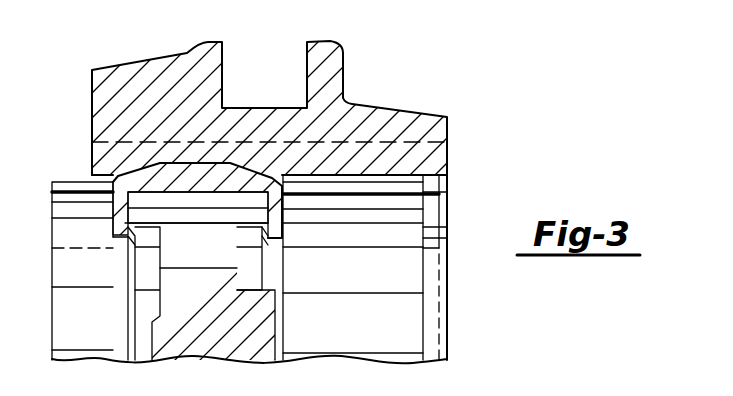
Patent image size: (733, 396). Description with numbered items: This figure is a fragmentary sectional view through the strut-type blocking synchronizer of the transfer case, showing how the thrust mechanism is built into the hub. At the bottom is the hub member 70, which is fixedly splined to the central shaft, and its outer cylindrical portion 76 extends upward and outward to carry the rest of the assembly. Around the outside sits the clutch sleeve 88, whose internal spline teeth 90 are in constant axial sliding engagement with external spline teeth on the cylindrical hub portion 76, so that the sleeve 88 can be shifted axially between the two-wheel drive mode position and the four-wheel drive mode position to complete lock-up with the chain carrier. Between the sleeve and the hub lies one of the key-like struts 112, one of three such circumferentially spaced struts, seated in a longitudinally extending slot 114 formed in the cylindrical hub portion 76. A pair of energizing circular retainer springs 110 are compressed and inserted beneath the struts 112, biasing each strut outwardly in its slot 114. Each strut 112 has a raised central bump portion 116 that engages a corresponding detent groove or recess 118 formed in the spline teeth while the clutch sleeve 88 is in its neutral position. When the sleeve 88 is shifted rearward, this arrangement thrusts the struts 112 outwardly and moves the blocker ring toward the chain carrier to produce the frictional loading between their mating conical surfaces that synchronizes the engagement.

The clutch sleeve 88 is at (385, 115).
The raised central bump portion 116 is at (180, 162).
The detent groove or recess 118 is at (216, 170).
The strut 112 is at (150, 177).
The energizing circular retainer spring 110 is at (130, 265).
The hub member 70 is at (265, 316).
The outer cylindrical portion 76 is at (413, 273).
The longitudinally extending slot 114 is at (423, 182).
The internal spline teeth 90 is at (430, 229).